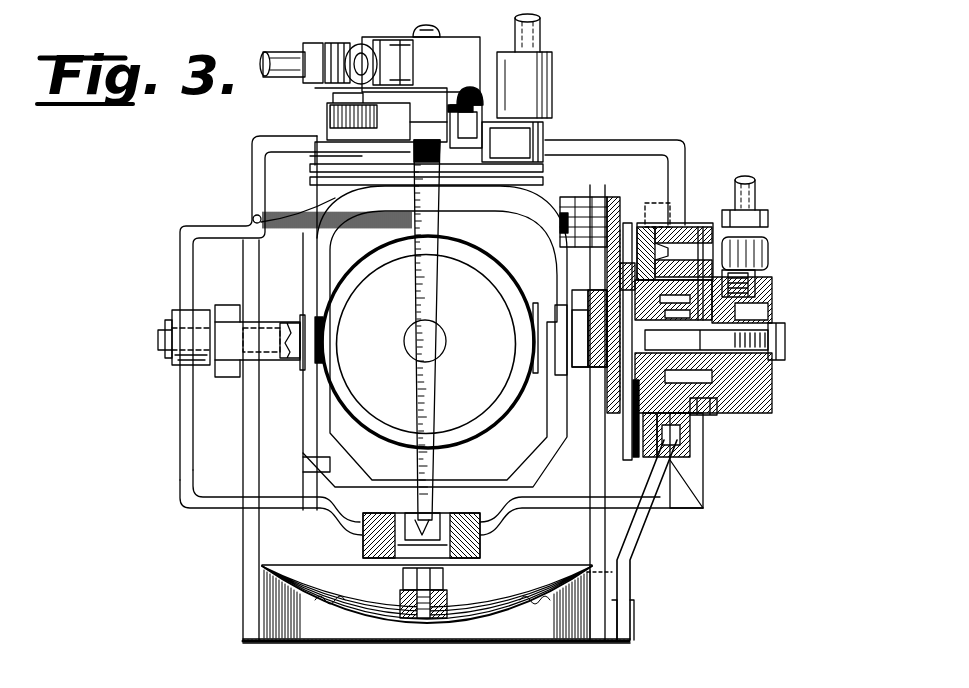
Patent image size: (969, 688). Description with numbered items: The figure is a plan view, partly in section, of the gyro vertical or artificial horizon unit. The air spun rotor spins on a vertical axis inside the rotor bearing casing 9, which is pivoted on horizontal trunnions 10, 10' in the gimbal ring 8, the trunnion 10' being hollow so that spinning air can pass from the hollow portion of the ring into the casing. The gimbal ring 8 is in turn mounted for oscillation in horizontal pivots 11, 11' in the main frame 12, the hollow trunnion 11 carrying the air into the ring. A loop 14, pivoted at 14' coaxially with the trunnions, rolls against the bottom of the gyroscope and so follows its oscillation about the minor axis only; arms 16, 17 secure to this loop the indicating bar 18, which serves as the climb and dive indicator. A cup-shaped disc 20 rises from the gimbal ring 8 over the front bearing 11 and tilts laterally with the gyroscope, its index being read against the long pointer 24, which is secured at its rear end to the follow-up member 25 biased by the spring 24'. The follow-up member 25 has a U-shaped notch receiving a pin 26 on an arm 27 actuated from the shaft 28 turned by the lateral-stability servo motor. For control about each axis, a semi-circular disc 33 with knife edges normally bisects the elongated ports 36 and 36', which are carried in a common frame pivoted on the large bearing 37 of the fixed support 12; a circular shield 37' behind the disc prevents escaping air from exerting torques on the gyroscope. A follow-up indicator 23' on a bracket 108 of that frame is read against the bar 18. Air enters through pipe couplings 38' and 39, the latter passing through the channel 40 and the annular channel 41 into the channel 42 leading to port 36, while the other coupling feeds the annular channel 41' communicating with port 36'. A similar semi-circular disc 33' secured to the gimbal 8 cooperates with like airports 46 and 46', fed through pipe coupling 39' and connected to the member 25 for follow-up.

The gimbal ring 8 is at (520, 220).
The rotor bearing casing 9 is at (488, 400).
The trunnion 10 is at (264, 329).
The hollow trunnion bearing 10' is at (438, 344).
The hollow trunnion pivot 11 is at (421, 565).
The horizontal pivot 11' is at (453, 21).
The main frame 12 is at (700, 480).
The loop 14 is at (163, 352).
The loop pivot 14' is at (586, 330).
The arm 16 is at (246, 553).
The arm 17 is at (596, 543).
The indicating bar 18 is at (441, 645).
The cup-shaped disc 20 is at (305, 565).
The follow-up indicator 23' is at (651, 623).
The long pointer 24 is at (404, 330).
The spring 24' is at (332, 234).
The follow-up member 25 is at (453, 133).
The pin 26 is at (463, 103).
The arm 27 is at (493, 113).
The shaft 28 is at (541, 30).
The semi-circular disc shutter 33 is at (651, 450).
The semi-circular disc 33' is at (405, 169).
The air port 36 is at (615, 291).
The air port 36' is at (705, 508).
The large bearing 37 is at (607, 341).
The circular shield 37' is at (598, 430).
The pipe coupling 38' is at (375, 48).
The pipe coupling 39 is at (763, 223).
The pipe coupling 39' is at (305, 49).
The channel 40 is at (747, 313).
The annular channel 41 is at (755, 223).
The annular channel 41' is at (730, 422).
The channel 42 is at (676, 250).
The air port 46 is at (271, 321).
The air port 46' is at (615, 166).
The bracket 108 is at (630, 550).